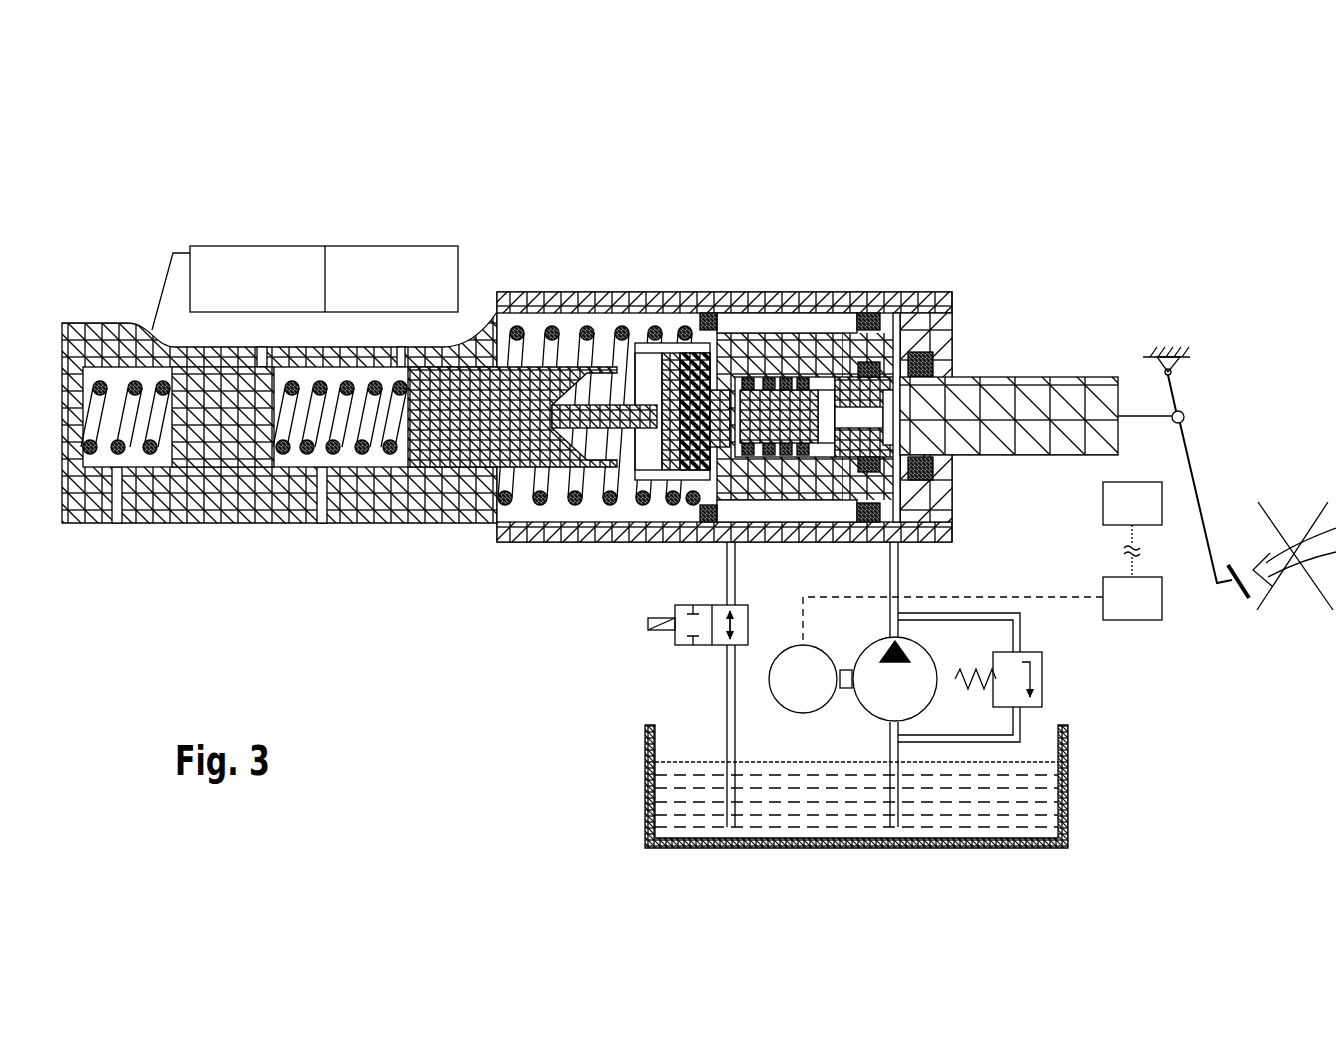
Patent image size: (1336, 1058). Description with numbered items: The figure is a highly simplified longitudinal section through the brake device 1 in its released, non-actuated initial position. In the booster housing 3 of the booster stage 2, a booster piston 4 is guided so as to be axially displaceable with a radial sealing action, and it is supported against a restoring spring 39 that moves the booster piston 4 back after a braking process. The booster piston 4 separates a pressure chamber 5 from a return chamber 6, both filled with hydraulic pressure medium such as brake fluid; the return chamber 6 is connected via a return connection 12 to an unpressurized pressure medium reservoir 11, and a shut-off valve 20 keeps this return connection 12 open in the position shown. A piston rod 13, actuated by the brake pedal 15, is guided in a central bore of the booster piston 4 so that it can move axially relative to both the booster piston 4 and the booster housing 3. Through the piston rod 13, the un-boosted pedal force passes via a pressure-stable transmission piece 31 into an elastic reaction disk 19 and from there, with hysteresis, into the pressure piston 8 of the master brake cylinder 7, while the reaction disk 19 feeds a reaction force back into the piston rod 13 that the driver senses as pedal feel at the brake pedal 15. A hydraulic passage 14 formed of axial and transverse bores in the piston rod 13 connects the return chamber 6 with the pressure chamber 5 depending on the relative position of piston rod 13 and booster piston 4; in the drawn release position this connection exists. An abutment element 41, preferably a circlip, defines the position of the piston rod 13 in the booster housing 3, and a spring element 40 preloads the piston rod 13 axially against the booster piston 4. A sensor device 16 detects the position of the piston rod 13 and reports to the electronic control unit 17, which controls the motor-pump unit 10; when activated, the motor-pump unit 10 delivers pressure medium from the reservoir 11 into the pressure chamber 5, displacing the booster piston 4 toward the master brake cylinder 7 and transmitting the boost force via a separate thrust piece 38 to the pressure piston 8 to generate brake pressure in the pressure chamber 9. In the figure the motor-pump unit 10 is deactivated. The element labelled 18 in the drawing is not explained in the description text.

The brake device 1 is at (682, 156).
The booster stage 2 is at (698, 258).
The booster housing 3 is at (840, 335).
The booster piston 4 is at (775, 350).
The pressure chamber 5 is at (901, 330).
The return chamber 6 is at (812, 322).
The master brake cylinder 7 is at (269, 228).
The pressure piston 8 is at (472, 410).
The pressure chamber 9 is at (362, 377).
The motor-pump unit 10 is at (849, 628).
The pressure medium reservoir 11 is at (1094, 800).
The return connection 12 is at (726, 688).
The piston rod 13 is at (1062, 412).
The hydraulic passage 14 is at (852, 410).
The brake pedal 15 is at (1193, 462).
The sensor device 16 is at (1122, 501).
The electronic control unit 17 is at (1133, 600).
The bearing seal 18 is at (914, 448).
The reaction disk 19 is at (658, 481).
The shut-off valve 20 is at (680, 636).
The transmission piece 31 is at (707, 482).
The thrust piece 38 is at (604, 360).
The restoring spring 39 is at (652, 327).
The spring element 40 is at (745, 385).
The abutment element 41 is at (898, 325).